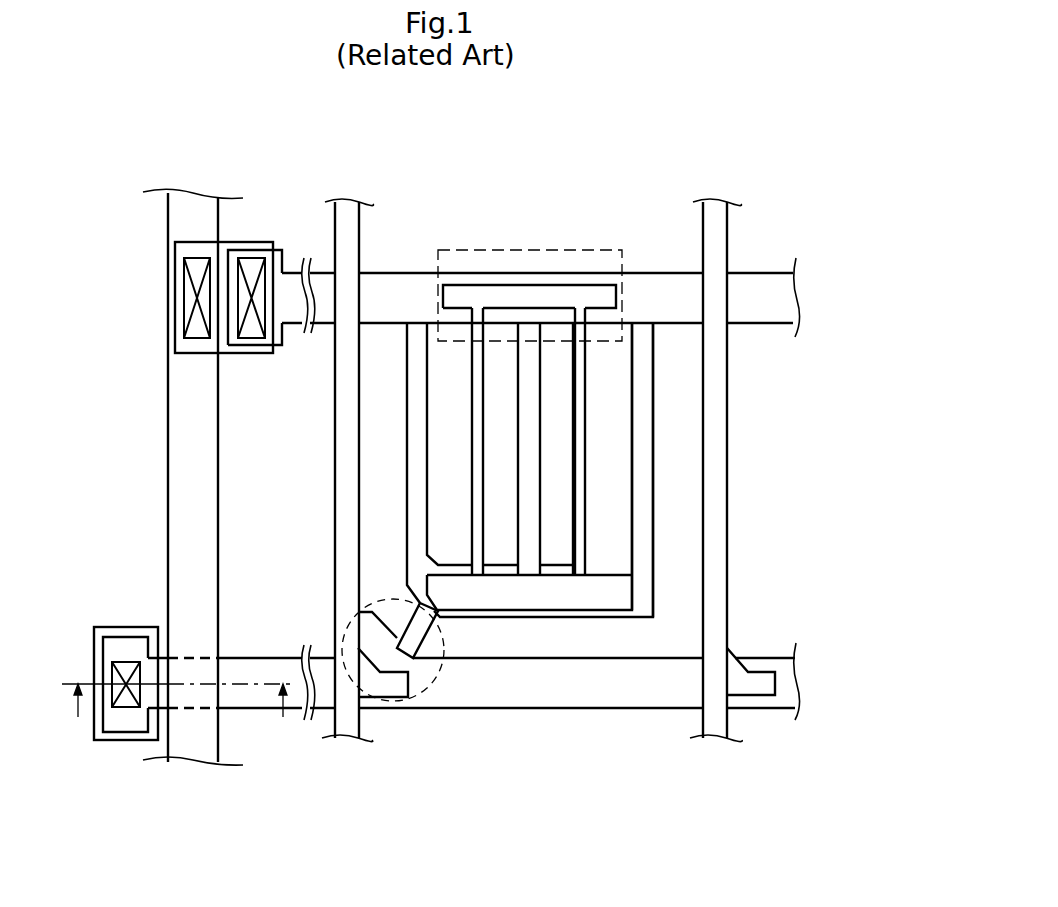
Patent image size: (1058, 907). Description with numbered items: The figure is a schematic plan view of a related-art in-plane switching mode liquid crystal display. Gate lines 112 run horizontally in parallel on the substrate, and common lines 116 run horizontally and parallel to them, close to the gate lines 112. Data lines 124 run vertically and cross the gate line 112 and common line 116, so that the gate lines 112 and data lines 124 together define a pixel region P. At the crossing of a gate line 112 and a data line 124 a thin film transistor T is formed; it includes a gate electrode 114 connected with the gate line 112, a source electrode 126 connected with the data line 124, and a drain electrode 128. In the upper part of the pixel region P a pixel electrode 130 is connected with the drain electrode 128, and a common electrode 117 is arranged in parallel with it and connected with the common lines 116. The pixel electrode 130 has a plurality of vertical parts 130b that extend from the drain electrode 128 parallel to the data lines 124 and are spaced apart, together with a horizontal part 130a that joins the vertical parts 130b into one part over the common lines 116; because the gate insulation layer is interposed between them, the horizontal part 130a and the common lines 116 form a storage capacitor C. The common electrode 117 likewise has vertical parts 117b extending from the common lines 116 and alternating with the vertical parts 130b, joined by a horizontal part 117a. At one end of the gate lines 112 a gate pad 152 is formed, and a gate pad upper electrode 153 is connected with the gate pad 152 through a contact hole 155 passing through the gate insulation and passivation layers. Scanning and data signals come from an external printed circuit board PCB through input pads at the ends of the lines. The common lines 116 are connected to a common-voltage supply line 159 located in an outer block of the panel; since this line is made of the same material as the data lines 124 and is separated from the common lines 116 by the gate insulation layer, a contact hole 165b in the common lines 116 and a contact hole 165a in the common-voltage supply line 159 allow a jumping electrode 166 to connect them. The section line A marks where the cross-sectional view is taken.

The gate line 112 is at (603, 695).
The gate electrode 114 is at (337, 607).
The common line 116 is at (288, 308).
The common electrode 117 is at (660, 473).
The horizontal part 117a is at (645, 597).
The vertical part 117b is at (645, 522).
The data line 124 is at (720, 457).
The source electrode 126 is at (393, 687).
The drain electrode 128 is at (420, 628).
The pixel electrode 130 is at (688, 425).
The horizontal part 130a is at (605, 298).
The vertical part 130b is at (580, 410).
The gate pad 152 is at (122, 727).
The gate pad upper electrode 153 is at (93, 648).
The contact hole 155 is at (128, 668).
The common-voltage supply line 159 is at (187, 466).
The contact hole 165a is at (190, 269).
The contact hole 165b is at (252, 263).
The jumping electrode 166 is at (193, 355).
The pixel region P is at (663, 494).
The storage capacitor C is at (559, 250).
The thin film transistor T is at (381, 598).
The line A-A' A is at (178, 717).
The printed circuit board PCB is at (198, 206).